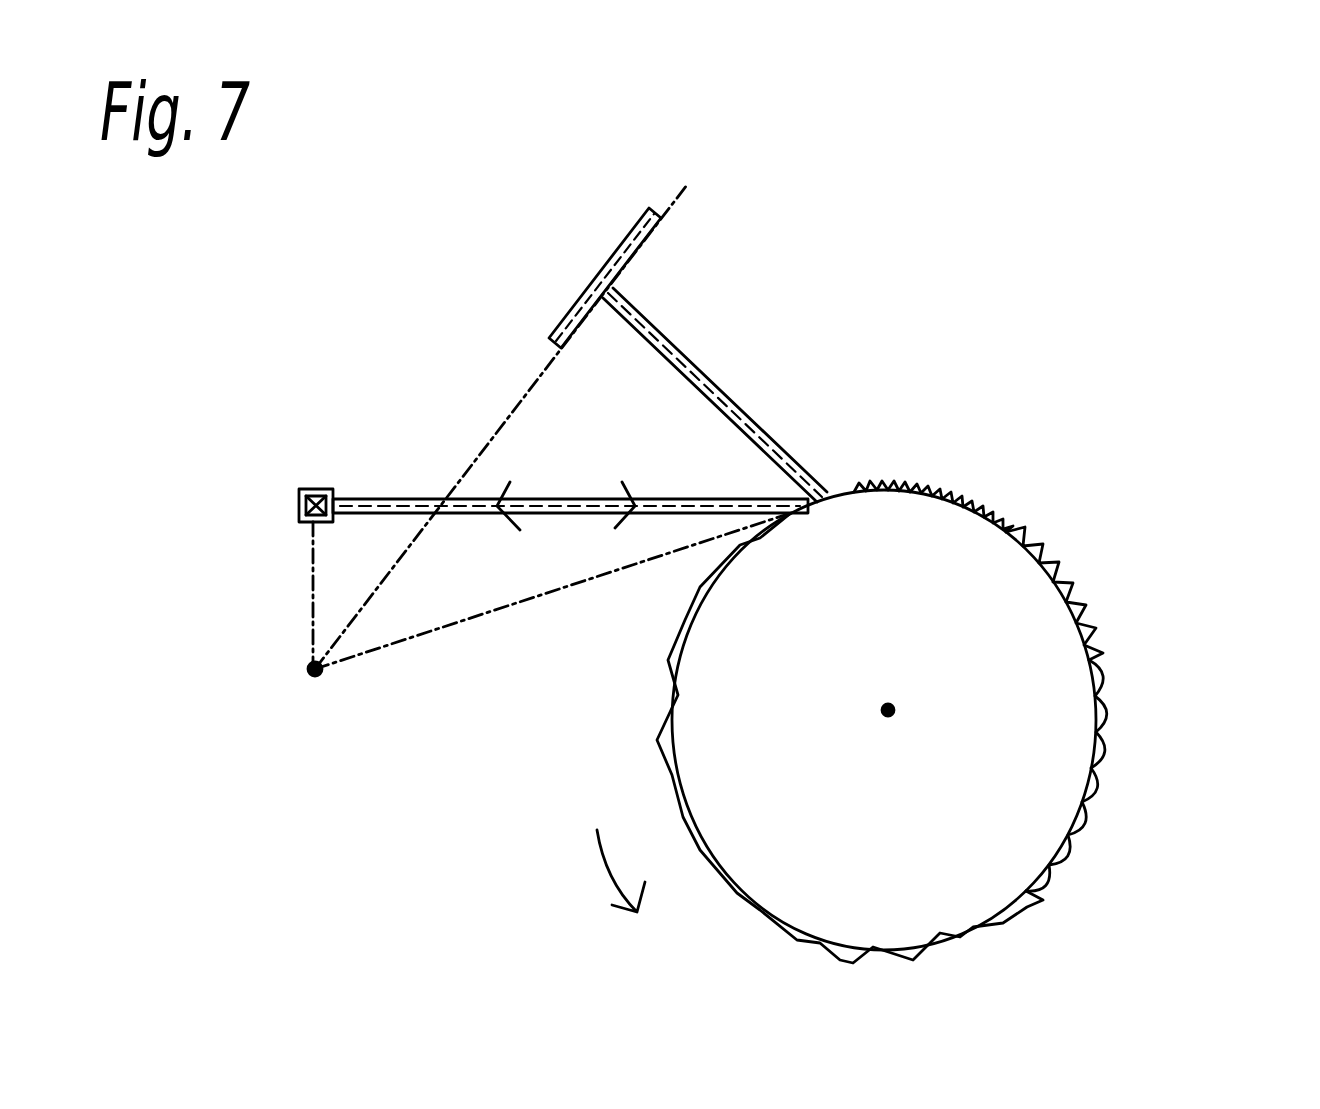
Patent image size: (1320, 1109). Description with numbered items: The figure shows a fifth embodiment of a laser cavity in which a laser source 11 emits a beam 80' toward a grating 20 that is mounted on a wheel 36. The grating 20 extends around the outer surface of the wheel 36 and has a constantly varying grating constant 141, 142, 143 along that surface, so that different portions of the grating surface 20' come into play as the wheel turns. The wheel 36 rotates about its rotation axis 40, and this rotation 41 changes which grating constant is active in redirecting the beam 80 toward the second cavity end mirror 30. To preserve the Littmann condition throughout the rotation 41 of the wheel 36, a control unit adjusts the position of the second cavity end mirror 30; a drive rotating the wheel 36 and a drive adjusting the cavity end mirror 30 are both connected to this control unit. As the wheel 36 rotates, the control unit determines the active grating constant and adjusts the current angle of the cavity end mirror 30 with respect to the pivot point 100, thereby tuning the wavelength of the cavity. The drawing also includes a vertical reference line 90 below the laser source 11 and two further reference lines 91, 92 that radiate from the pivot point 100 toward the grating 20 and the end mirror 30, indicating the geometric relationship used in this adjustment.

The laser source 11 is at (300, 495).
The grating 20 is at (884, 667).
The drum surface 20' is at (1167, 702).
The second cavity end mirror 30 is at (613, 253).
The wheel 36 is at (1047, 888).
The rotation axis 40 is at (895, 715).
The rotation 41 is at (600, 855).
The beam 80 is at (738, 395).
The beam 80' is at (570, 470).
The vertical reference line 90 is at (312, 588).
The reference line 91 is at (515, 610).
The reference line 92 is at (523, 415).
The pivot point 100 is at (302, 668).
The grating constant 141 is at (891, 474).
The grating constant 142 is at (1105, 553).
The grating constant 143 is at (1142, 772).